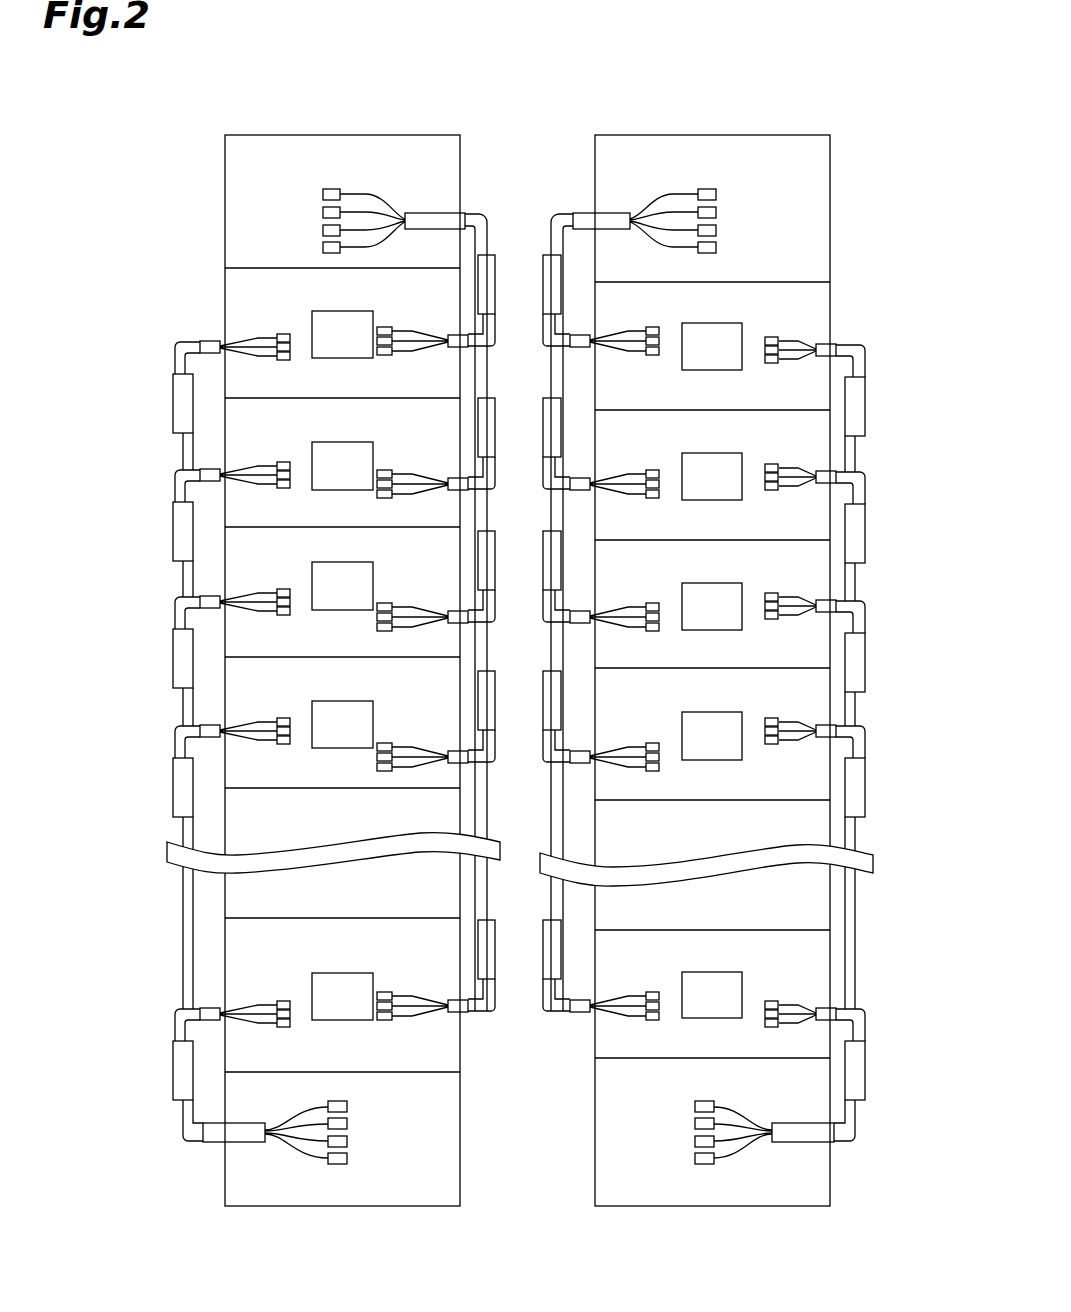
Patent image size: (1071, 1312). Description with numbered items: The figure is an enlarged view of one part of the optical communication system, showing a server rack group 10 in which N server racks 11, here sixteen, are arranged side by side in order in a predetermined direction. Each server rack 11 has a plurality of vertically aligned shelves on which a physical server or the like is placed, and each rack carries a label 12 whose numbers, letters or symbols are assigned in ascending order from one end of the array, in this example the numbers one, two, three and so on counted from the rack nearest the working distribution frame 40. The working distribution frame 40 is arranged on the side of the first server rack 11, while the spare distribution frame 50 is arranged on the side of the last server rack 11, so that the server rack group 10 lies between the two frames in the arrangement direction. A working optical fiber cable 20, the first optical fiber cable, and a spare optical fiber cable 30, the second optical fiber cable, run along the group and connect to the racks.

The server rack group 10 is at (232, 268).
The server rack 11 is at (248, 296).
The label 12 is at (310, 321).
The working optical fiber cable 20 is at (548, 238).
The spare optical fiber cable 30 is at (185, 896).
The working distribution frame 40 is at (266, 148).
The spare distribution frame 50 is at (275, 1195).